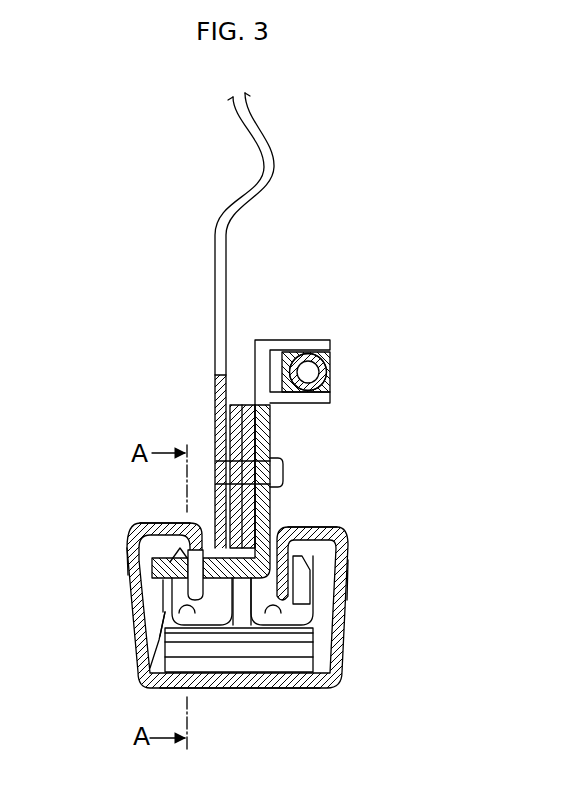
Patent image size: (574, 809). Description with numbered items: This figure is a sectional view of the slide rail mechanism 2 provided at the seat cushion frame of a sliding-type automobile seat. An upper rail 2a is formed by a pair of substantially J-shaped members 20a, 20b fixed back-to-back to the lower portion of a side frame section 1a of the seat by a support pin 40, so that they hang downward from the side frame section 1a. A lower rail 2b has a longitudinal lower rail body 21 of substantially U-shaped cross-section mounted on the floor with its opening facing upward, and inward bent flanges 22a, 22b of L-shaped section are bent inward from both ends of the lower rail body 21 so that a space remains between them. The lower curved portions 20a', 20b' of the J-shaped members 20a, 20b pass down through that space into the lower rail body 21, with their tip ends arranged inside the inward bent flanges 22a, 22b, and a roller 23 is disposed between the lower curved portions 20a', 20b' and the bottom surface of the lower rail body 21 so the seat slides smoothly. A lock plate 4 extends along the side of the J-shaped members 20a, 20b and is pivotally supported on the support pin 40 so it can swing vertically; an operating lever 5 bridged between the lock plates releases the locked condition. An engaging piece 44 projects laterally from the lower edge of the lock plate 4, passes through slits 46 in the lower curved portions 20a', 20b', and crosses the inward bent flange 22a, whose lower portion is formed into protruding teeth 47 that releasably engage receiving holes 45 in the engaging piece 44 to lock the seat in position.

The side frame section 1a is at (222, 261).
The slide rail mechanism 2 is at (143, 523).
The upper rail 2a is at (151, 610).
The lower rail 2b is at (360, 536).
The lock plate 4 is at (274, 427).
The operating lever 5 is at (333, 372).
The substantially J-shaped member 20a is at (187, 465).
The substantially J-shaped member 20b is at (332, 491).
The lower curved portion 20a' is at (174, 635).
The lower curved portion 20b' is at (284, 653).
The lower rail body 21 is at (347, 652).
The inward bent flange 22a is at (186, 545).
The inward bent flange 22b is at (303, 534).
The roller 23 is at (240, 673).
The support pin 40 is at (285, 470).
The engaging piece 44 is at (128, 567).
The receiving hole 45 is at (140, 537).
The slit 46 is at (160, 592).
The protruding tooth 47 is at (155, 650).